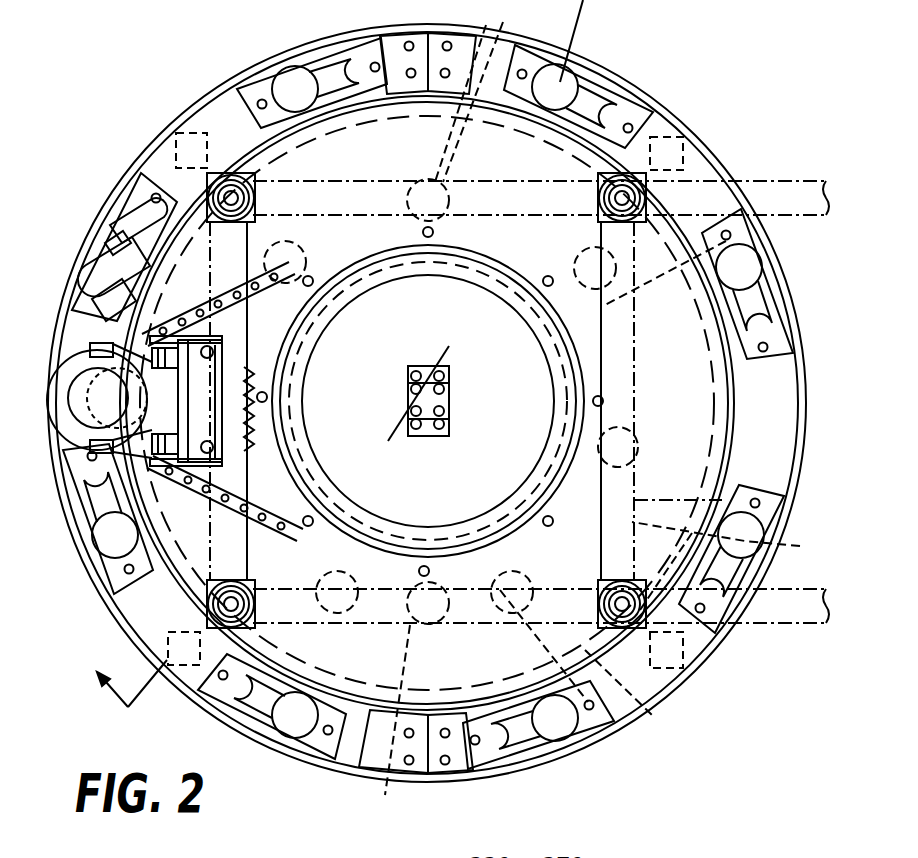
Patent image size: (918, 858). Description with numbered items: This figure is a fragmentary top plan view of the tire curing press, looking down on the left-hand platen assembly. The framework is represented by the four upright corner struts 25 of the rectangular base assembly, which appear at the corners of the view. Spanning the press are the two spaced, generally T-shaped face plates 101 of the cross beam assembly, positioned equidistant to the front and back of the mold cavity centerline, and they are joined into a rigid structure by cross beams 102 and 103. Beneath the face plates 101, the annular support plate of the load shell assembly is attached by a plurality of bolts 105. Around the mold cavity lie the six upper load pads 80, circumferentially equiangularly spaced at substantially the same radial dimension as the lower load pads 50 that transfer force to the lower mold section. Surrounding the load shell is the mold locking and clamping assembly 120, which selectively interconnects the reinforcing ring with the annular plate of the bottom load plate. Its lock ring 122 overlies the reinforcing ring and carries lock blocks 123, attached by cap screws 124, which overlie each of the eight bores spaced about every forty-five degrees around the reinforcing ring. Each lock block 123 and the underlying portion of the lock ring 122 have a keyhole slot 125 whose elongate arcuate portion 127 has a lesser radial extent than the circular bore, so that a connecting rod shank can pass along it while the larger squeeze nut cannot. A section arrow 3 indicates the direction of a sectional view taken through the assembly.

The section line 3- 3 is at (122, 677).
The corner struts 25 is at (180, 118).
The lower load pads 50 is at (562, 367).
The upper load pads 80 is at (509, 31).
The face plates 101 is at (759, 182).
The cross beams 102 is at (722, 503).
The cross beams 103 is at (128, 200).
The bolts 105 is at (232, 193).
The mold locking and clamping assembly 120 is at (103, 604).
The lock ring 122 is at (358, 752).
The lock blocks 123 is at (322, 762).
The cap screws 124 is at (125, 570).
The keyhole slot 125 is at (100, 530).
The elongate arcuate portion 127 is at (98, 487).